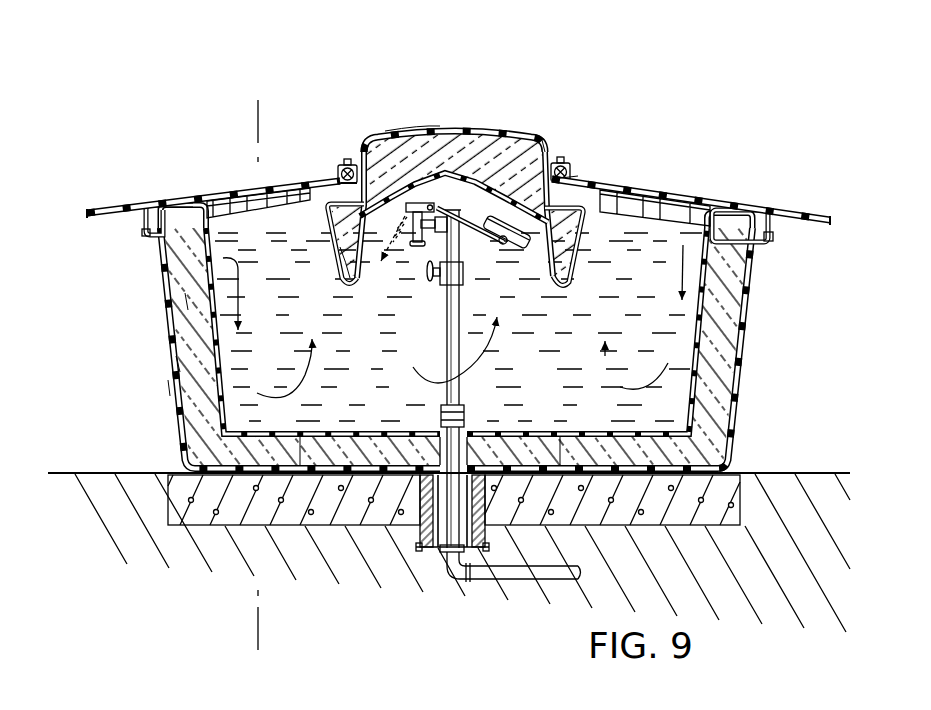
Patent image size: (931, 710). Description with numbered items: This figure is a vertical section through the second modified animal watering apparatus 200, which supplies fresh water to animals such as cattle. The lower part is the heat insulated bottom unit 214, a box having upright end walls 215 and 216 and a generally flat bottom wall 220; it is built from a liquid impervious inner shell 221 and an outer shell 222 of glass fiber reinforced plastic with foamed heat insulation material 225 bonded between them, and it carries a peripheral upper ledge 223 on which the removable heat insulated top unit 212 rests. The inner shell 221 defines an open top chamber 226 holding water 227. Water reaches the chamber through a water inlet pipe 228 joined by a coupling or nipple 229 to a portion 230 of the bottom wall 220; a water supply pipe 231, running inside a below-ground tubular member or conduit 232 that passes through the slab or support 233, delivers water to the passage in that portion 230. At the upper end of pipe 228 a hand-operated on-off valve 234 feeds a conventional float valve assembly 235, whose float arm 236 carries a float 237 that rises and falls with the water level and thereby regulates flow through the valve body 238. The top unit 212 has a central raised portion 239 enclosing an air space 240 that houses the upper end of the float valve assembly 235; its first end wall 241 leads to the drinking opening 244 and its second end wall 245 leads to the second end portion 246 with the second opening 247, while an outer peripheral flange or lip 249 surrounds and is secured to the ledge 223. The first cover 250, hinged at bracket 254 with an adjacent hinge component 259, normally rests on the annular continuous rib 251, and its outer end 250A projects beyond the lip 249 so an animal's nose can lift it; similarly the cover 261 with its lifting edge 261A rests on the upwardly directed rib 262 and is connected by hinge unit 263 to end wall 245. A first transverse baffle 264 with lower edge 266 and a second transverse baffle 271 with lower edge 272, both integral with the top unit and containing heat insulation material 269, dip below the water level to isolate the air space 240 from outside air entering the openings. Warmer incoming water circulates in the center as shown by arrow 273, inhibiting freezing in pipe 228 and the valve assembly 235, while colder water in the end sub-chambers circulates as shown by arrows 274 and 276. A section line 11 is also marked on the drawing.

The section line II-II 11 is at (253, 126).
The animal watering apparatus 200 is at (796, 122).
The top unit 212 is at (464, 163).
The bottom unit 214 is at (475, 337).
The end wall 215 is at (170, 396).
The end wall 216 is at (751, 303).
The bottom wall 220 is at (378, 432).
The inner shell 221 is at (213, 371).
The outer shell 222 is at (176, 356).
The upper ledge 223 is at (166, 265).
The heat insulation material 225 is at (190, 322).
The open top chamber 226 is at (458, 327).
The water 227 is at (185, 293).
The water inlet pipe 228 is at (489, 410).
The coupling or nipple 229 is at (466, 412).
The portion of bottom wall 230 is at (462, 452).
The water supply pipe 231 is at (517, 576).
The tubular member or conduit 232 is at (423, 538).
The slab or support 233 is at (227, 503).
The hand-operated on-off valve 234 is at (441, 286).
The float valve assembly 235 is at (428, 253).
The float arm 236 is at (486, 224).
The float 237 is at (520, 248).
The valve body 238 is at (411, 205).
The central raised portion 239 is at (497, 129).
The enclosed air space 240 is at (546, 140).
The first end wall 241 is at (409, 133).
The drinking hole or opening 244 is at (262, 200).
The second end wall 245 is at (549, 140).
The second end portion 246 is at (578, 176).
The second opening or hole 247 is at (664, 208).
The outer peripheral flange or lip 249 is at (757, 246).
The first cover 250 is at (193, 210).
The outer end of cover 250A is at (87, 217).
The annular continuous rib 251 is at (199, 203).
The bracket 254 is at (358, 160).
The clamp 259 is at (345, 164).
The cover 261 is at (714, 194).
The lifting edge 261A is at (818, 224).
The annular upwardly directed flange or rib 262 is at (761, 223).
The hinge unit 263 is at (577, 158).
The first transverse baffle or dam 264 is at (340, 247).
The transverse lower edge 266 is at (355, 280).
The heat insulation material 269 is at (458, 158).
The second transverse baffle or dam 271 is at (604, 281).
The transverse lower edge 272 is at (505, 318).
The arrow 273 is at (498, 346).
The arrow 274 is at (300, 377).
The arrow 276 is at (672, 360).